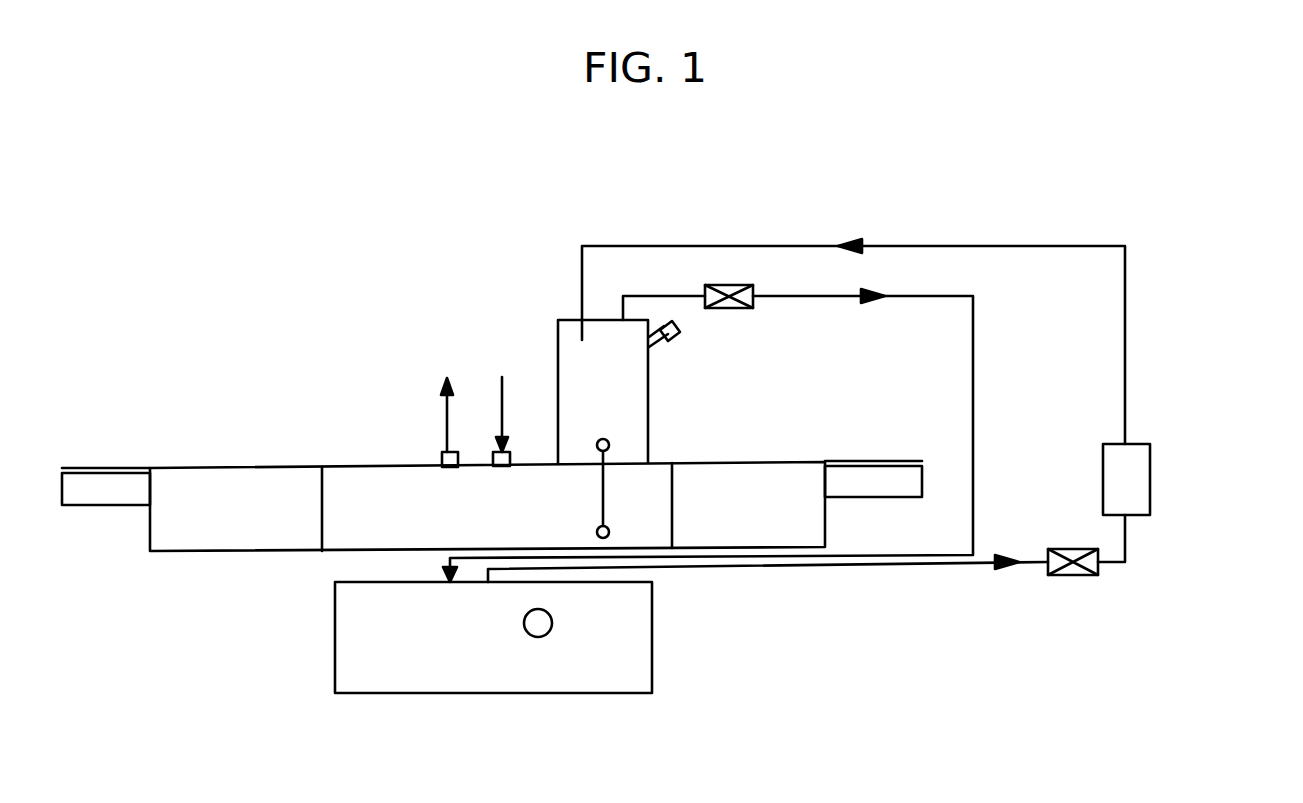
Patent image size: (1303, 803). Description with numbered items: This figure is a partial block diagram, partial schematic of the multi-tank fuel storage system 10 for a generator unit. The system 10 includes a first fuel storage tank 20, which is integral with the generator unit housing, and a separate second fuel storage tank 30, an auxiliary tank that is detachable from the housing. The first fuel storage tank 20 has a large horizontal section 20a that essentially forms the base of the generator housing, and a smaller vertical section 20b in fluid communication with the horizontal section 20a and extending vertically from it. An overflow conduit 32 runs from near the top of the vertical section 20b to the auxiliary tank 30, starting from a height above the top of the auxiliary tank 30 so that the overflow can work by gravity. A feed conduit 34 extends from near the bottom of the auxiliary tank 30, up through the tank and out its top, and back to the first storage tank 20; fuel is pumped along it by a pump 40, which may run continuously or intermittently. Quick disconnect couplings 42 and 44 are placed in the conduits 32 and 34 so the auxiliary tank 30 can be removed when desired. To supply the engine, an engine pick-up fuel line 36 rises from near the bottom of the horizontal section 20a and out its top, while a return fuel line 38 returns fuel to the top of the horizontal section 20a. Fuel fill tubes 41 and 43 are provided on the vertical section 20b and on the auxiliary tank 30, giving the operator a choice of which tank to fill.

The multi-tank fuel storage system 10 is at (990, 375).
The first fuel storage tank 20 is at (650, 400).
The horizontal section 20a is at (422, 533).
The vertical section 20b is at (632, 401).
The second fuel storage tank 30 is at (657, 630).
The overflow conduit 32 is at (965, 289).
The feed conduit 34 is at (821, 571).
The engine pick-up fuel line 36 is at (437, 448).
The engine return fuel line 38 is at (517, 452).
The pump 40 is at (1150, 467).
The fuel fill tube 41 is at (683, 341).
The quick disconnect coupling 42 is at (732, 275).
The fuel fill tube 43 is at (540, 637).
The quick disconnect coupling 44 is at (1062, 581).